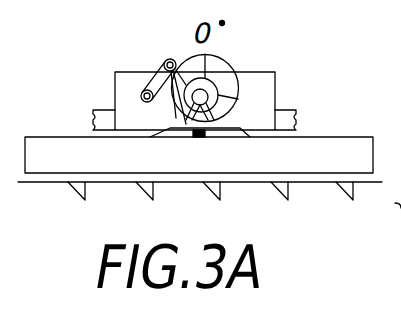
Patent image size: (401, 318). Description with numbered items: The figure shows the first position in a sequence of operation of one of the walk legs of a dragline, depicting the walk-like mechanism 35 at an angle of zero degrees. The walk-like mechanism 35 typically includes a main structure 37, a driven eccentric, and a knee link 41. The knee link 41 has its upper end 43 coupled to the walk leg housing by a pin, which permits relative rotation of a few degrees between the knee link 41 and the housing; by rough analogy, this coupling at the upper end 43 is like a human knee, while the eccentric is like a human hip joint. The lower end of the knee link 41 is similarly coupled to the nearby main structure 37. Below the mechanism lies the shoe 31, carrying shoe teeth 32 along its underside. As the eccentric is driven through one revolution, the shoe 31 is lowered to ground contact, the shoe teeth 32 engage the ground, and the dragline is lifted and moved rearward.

The shoe 31 is at (88, 153).
The shoe teeth 32 is at (272, 185).
The walk-like mechanism 35 is at (280, 57).
The main structure 37 is at (268, 92).
The knee link 41 is at (152, 85).
The upper end of the knee link 43 is at (168, 60).